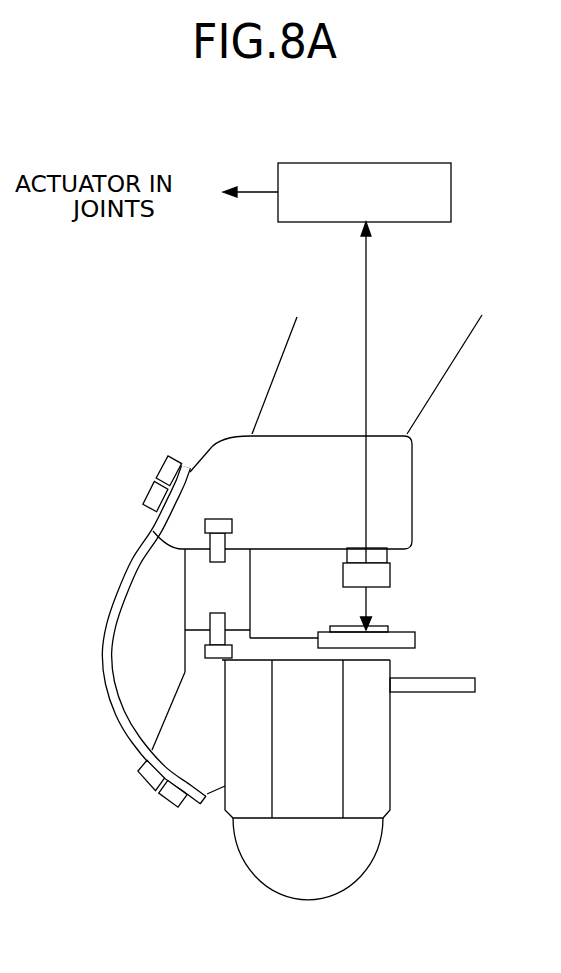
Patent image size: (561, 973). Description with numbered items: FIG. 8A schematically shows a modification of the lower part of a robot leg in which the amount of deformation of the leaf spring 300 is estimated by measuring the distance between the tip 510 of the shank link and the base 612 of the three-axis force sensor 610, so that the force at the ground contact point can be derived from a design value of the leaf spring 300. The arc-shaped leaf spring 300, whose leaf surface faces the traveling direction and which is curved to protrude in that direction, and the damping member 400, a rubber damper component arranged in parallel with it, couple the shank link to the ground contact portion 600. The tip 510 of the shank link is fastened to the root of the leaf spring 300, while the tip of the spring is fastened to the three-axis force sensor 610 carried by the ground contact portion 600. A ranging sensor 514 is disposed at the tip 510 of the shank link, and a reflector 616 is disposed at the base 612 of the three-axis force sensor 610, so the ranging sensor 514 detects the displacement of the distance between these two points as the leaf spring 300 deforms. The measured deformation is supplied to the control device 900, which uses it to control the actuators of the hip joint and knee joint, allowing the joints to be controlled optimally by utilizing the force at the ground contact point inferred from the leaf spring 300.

The leaf spring 300 is at (118, 605).
The damping member 400 is at (198, 583).
The tip of the shank link 510 is at (400, 487).
The ranging sensor 514 is at (377, 575).
The ground contact portion 600 is at (400, 833).
The 3-axis force sensor 610 is at (380, 755).
The base of the 3-axis force sensor 612 is at (378, 655).
The reflector 616 is at (390, 638).
The control device 900 is at (367, 163).